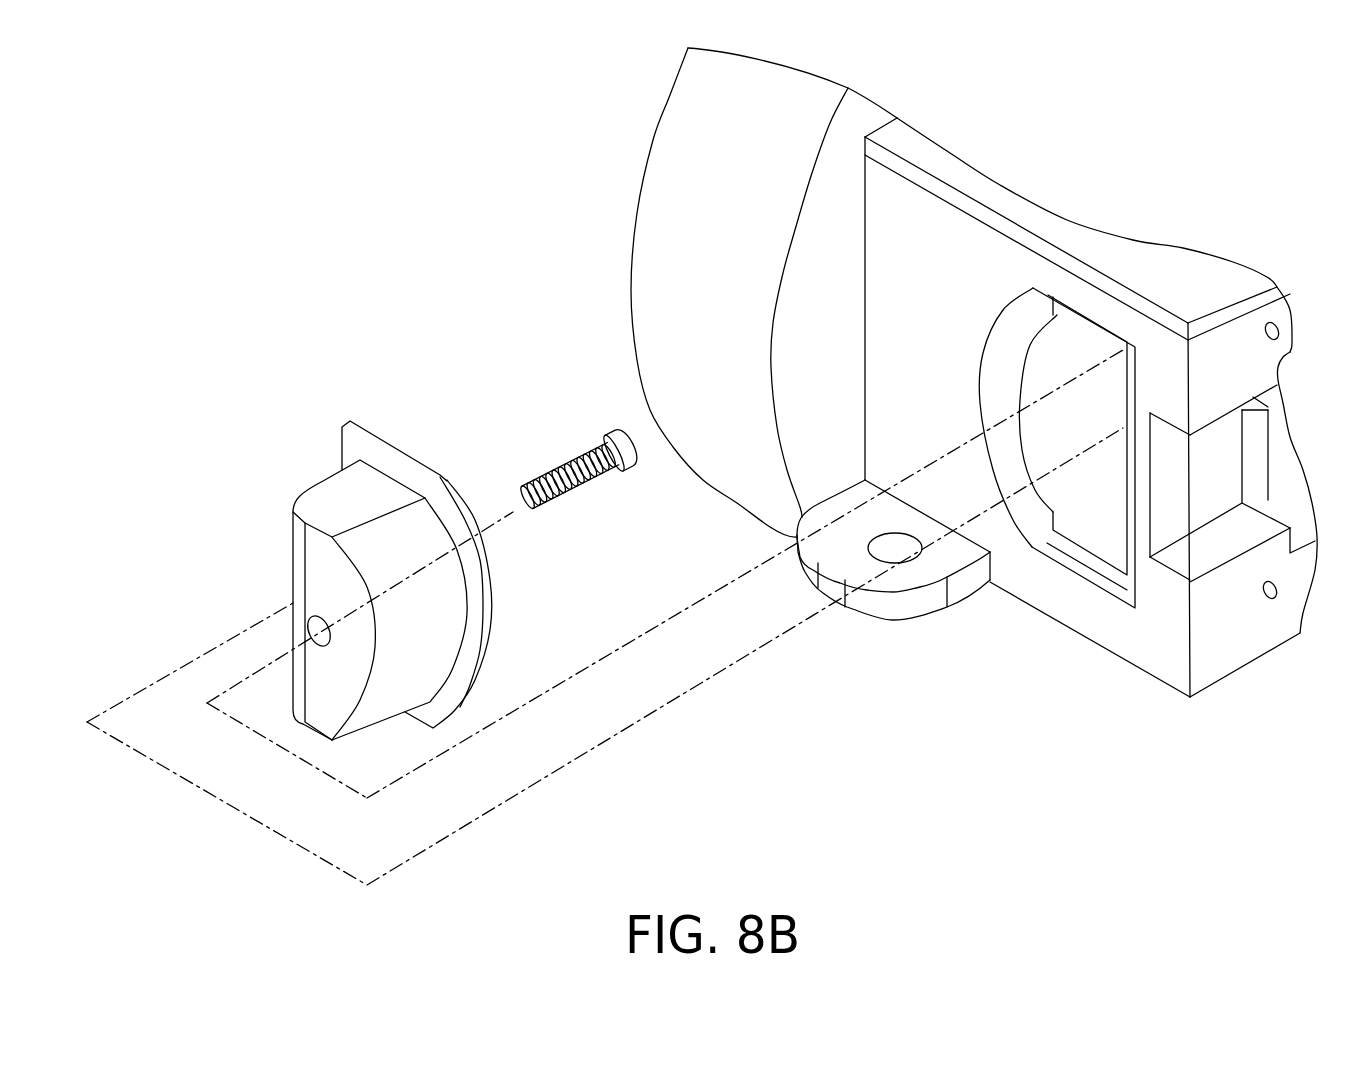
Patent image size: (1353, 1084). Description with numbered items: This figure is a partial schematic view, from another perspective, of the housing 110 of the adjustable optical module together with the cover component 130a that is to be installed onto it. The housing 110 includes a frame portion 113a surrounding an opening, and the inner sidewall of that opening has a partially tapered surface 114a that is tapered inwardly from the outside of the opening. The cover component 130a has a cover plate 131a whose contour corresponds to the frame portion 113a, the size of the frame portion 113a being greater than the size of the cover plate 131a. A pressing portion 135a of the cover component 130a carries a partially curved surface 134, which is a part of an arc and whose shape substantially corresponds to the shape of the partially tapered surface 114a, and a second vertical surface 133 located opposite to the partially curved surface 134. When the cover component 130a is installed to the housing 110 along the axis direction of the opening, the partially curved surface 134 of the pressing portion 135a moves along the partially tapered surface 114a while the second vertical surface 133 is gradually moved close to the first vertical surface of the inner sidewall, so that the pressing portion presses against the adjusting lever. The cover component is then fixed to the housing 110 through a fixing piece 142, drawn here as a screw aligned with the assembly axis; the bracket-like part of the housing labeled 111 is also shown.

The housing 110 is at (974, 378).
The bracket portion of housing 111 is at (987, 262).
The frame portion 113a is at (985, 393).
The partially tapered surface 114a is at (1060, 437).
The cover component 130a is at (293, 437).
The cover plate 131a is at (398, 446).
The second vertical surface 133 is at (293, 543).
The partially curved surface 134 is at (438, 623).
The pressing portion 135a is at (327, 498).
The fixing piece 142 is at (550, 476).